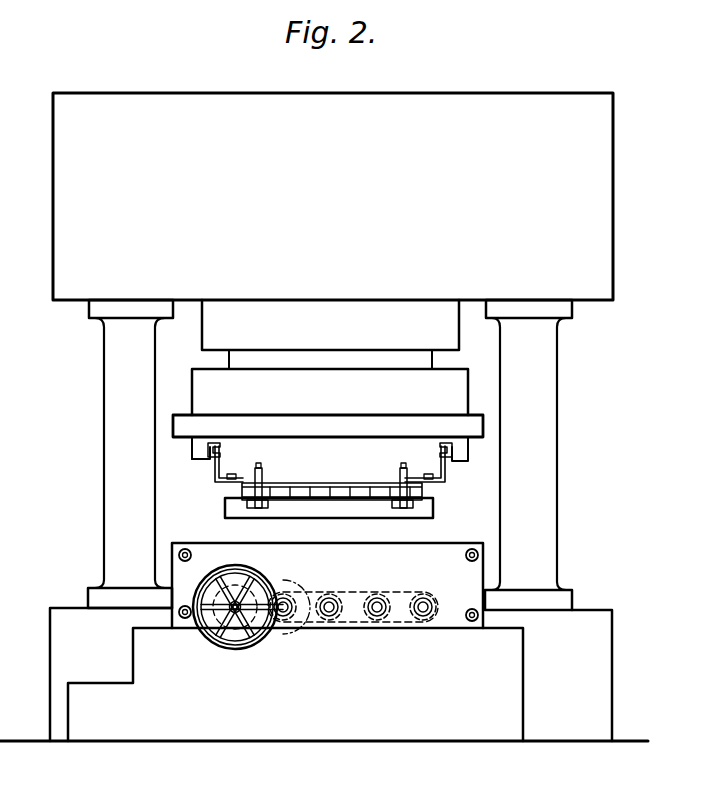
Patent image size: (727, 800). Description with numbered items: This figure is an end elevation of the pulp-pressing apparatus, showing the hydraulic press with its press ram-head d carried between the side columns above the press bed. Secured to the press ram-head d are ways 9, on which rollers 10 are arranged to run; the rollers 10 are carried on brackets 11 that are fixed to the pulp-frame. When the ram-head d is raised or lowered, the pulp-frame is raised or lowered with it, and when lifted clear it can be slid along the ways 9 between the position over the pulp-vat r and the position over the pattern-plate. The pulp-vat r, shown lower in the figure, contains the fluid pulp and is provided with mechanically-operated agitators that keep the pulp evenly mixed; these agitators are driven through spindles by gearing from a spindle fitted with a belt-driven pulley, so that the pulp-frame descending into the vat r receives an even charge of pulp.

The ways 9 is at (198, 458).
The rollers 10 is at (211, 446).
The brackets 11 is at (221, 468).
The press ram-head d is at (330, 415).
The pulp-vat r is at (249, 658).